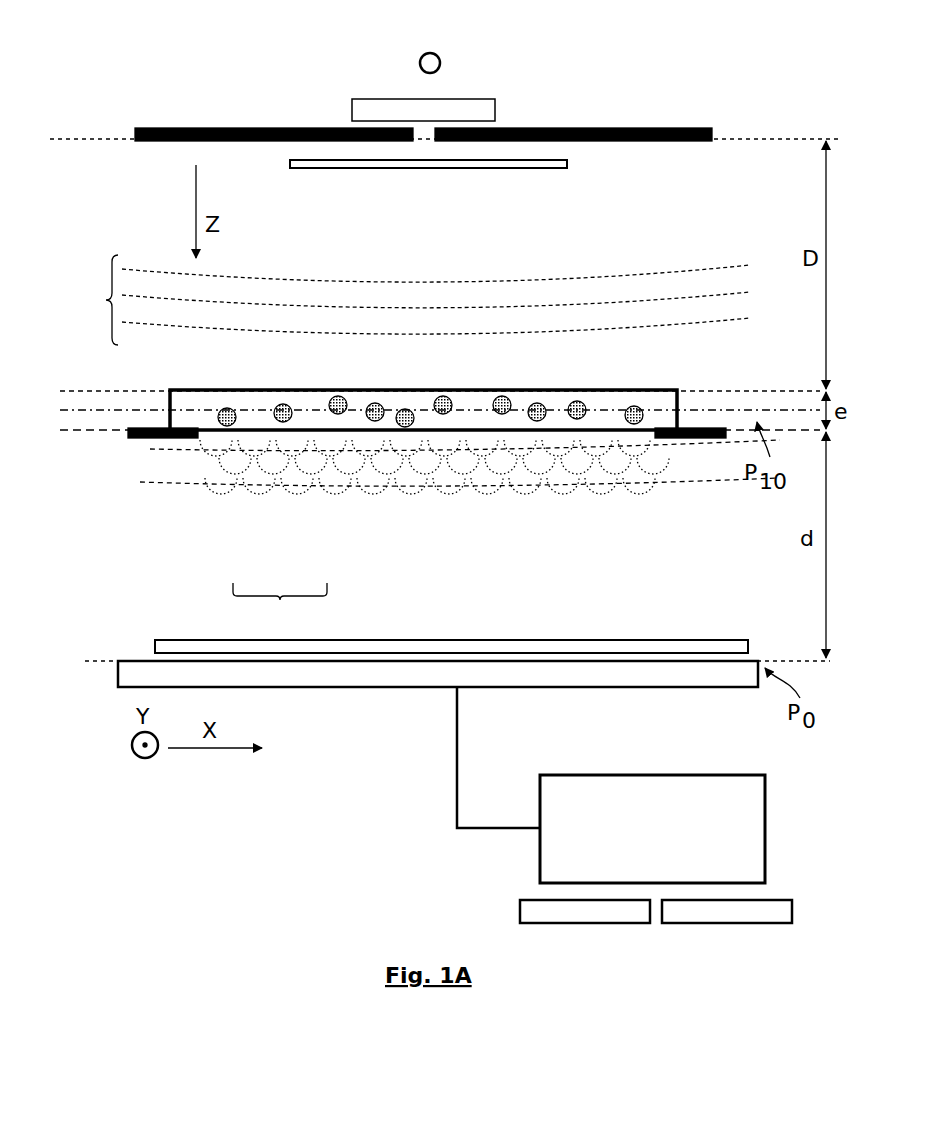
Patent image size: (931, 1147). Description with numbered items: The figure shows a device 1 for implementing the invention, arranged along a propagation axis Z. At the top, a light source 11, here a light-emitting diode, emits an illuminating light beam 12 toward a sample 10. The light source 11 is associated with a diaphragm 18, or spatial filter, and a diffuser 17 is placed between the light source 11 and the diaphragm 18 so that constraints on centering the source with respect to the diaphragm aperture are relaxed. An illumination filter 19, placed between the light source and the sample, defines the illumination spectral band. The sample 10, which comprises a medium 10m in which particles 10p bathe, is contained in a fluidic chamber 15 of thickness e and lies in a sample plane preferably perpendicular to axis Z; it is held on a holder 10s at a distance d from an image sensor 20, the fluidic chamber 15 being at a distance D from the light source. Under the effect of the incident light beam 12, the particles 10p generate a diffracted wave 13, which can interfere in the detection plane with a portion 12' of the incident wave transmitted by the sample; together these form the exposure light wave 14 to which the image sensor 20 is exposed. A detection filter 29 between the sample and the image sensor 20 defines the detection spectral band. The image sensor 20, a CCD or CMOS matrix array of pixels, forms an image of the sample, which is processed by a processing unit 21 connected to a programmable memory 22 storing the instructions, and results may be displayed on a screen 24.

The device 1 is at (98, 60).
The light source 11 is at (418, 62).
The diffuser 17 is at (480, 113).
The diaphragm 18 is at (716, 135).
The illumination filter 19 is at (571, 166).
The light beam 12 is at (406, 300).
The sample 10 is at (166, 400).
The holder 10s is at (153, 440).
The particles 10p is at (322, 400).
The medium 10m is at (607, 409).
The fluidic chamber 15 is at (686, 404).
The diffracted wave 13 is at (420, 504).
The transmitted portion of the incident light wave 12' is at (266, 543).
The exposure light wave 14 is at (280, 606).
The detection filter 29 is at (754, 641).
The image sensor 20 is at (674, 672).
The screen 24 is at (743, 802).
The processing unit 21 is at (580, 916).
The programmable memory 22 is at (705, 916).